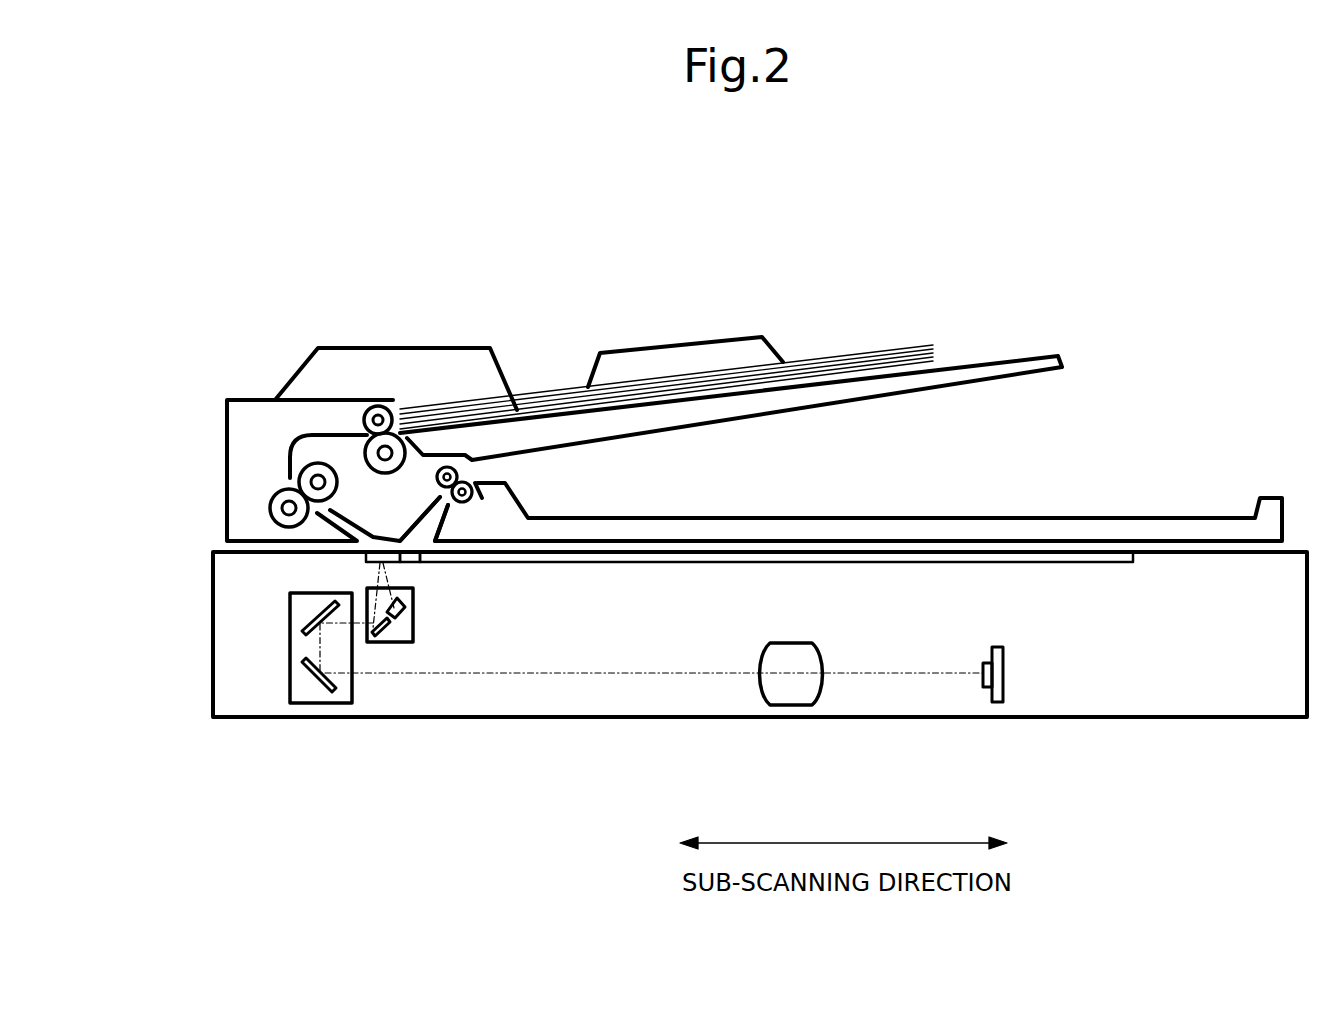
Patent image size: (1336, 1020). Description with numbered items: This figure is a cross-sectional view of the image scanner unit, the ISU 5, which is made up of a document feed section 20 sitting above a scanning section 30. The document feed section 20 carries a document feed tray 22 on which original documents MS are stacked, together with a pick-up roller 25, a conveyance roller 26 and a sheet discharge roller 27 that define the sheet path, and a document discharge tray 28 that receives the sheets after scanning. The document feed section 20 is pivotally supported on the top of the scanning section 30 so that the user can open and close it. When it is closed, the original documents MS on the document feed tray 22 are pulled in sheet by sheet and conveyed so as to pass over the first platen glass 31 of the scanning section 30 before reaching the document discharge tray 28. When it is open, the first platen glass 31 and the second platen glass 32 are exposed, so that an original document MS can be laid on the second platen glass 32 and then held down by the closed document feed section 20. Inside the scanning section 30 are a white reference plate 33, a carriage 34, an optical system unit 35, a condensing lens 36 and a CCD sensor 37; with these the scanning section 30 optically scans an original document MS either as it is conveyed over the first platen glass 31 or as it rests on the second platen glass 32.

The image scanner unit 5 is at (698, 287).
The document feed section 20 is at (1193, 462).
The document feed tray 22 is at (1012, 357).
The original documents MS is at (813, 358).
The pick-up roller 25 is at (373, 405).
The conveyance roller 26 is at (282, 488).
The sheet discharge roller 27 is at (468, 481).
The document discharge tray 28 is at (1103, 517).
The white reference plate 33 is at (405, 551).
The scanning section 30 is at (1135, 743).
The first platen glass 31 is at (365, 563).
The second platen glass 32 is at (873, 565).
The carriage 34 is at (390, 645).
The optical system unit 35 is at (308, 706).
The condensing lens 36 is at (790, 706).
The charge coupled device (CCD) sensor 37 is at (998, 703).